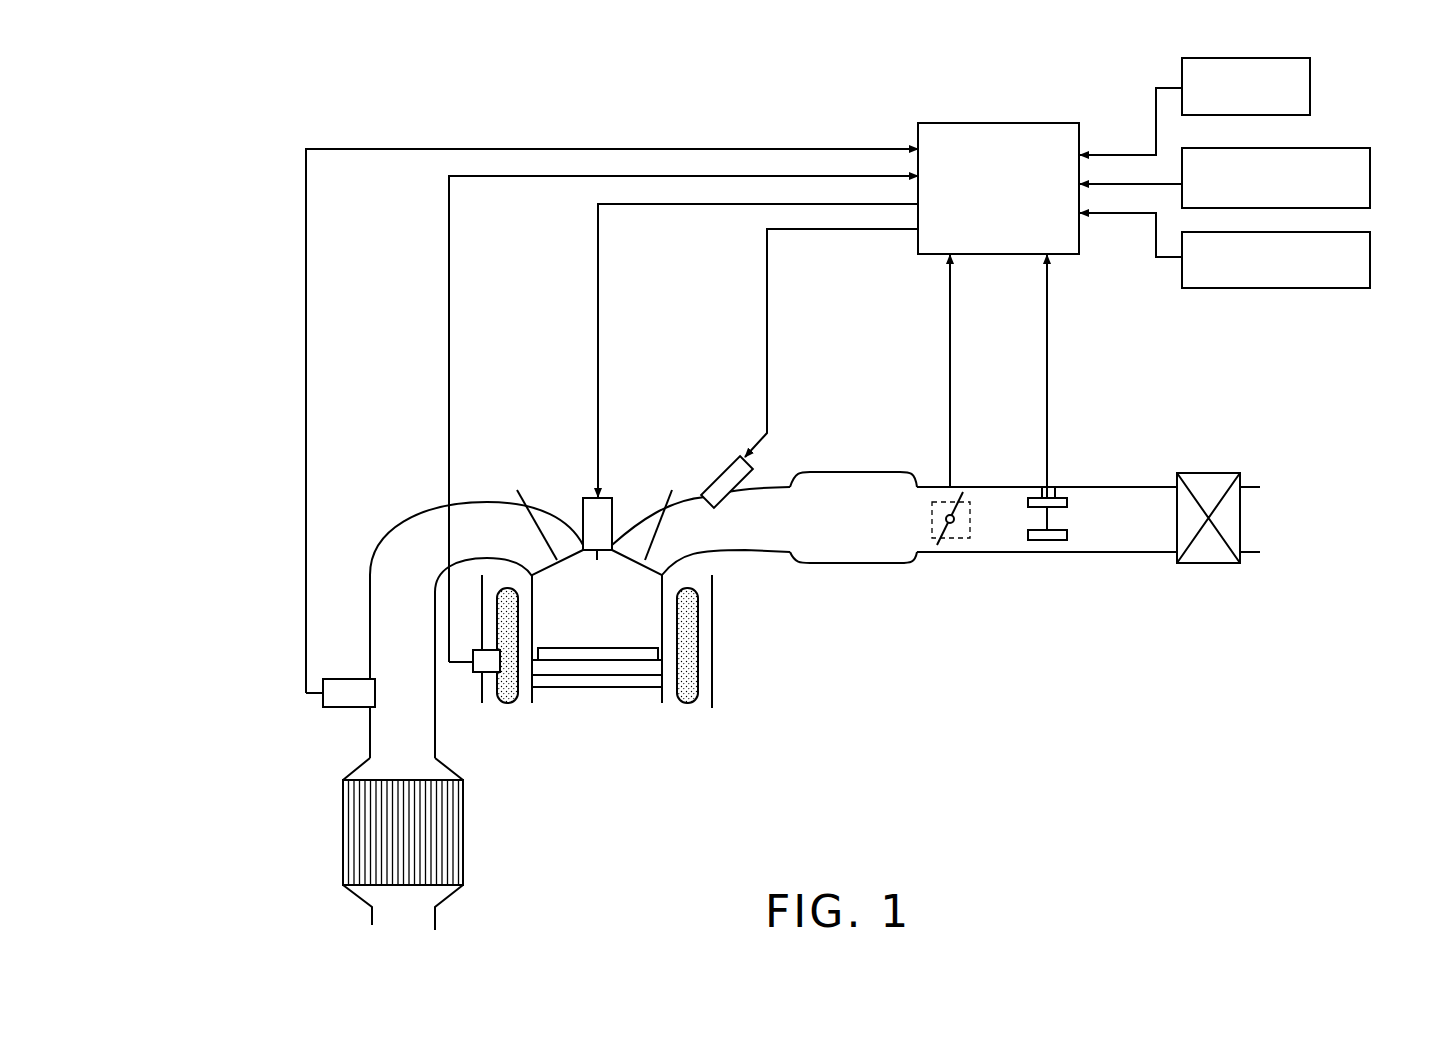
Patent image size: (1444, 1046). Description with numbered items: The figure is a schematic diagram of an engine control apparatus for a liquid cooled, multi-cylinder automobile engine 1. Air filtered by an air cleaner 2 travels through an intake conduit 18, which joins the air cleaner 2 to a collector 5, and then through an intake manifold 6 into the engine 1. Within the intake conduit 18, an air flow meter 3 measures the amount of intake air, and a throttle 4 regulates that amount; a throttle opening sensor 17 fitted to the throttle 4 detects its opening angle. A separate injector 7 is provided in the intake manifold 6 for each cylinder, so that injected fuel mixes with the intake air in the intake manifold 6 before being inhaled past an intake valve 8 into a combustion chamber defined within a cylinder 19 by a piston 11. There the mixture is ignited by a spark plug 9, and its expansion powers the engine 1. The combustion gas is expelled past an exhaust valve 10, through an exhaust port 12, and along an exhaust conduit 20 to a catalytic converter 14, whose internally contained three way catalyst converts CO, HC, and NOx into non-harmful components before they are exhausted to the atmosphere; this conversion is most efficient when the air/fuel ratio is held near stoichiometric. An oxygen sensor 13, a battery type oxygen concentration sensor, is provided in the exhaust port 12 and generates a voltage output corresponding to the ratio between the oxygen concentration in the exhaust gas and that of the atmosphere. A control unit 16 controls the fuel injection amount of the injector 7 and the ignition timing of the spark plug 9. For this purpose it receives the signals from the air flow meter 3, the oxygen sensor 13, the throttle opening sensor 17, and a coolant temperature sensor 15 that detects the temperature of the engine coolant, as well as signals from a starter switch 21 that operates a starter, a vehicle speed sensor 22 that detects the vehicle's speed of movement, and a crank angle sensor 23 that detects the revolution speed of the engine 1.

The engine 1 is at (728, 670).
The air cleaner 2 is at (1215, 473).
The air flow meter 3 is at (1050, 542).
The throttle 4 is at (945, 540).
The collector 5 is at (855, 563).
The intake manifold 6 is at (740, 553).
The injector 7 is at (715, 470).
The intake valve 8 is at (668, 500).
The spark plug 9 is at (580, 508).
The exhaust valve 10 is at (530, 492).
The piston 11 is at (582, 648).
The exhaust port 12 is at (407, 537).
The oxygen sensor 13 is at (327, 702).
The catalytic converter 14 is at (463, 855).
The coolant temperature sensor 15 is at (478, 673).
The control unit 16 is at (1075, 240).
The throttle opening sensor 17 is at (970, 526).
The intake conduit 18 is at (1000, 487).
The cylinder 19 is at (642, 628).
The exhaust conduit 20 is at (365, 740).
The starter switch 21 is at (1310, 80).
The vehicle speed sensor 22 is at (1370, 190).
The crank angle sensor 23 is at (1370, 270).